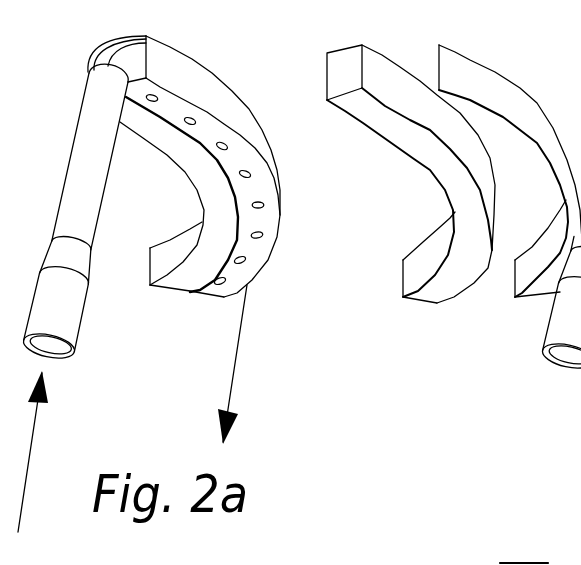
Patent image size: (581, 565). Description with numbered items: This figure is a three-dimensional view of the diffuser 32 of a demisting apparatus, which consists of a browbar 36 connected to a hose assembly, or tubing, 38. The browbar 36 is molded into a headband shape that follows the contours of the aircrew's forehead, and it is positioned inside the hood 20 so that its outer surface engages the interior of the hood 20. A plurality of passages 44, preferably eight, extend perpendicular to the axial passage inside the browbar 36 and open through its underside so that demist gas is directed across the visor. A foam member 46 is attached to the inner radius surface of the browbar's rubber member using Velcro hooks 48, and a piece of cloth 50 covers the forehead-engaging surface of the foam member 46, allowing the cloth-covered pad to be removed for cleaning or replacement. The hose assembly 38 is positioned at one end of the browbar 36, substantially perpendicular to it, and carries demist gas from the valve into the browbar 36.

The hood 20 is at (497, 563).
The diffuser 32 is at (156, 41).
The browbar 36 is at (238, 158).
The hose assembly 38 is at (73, 188).
The passages 44 is at (194, 118).
The foam member 46 is at (442, 285).
The Velcro hooks 48 is at (480, 85).
The piece of cloth 50 is at (415, 272).